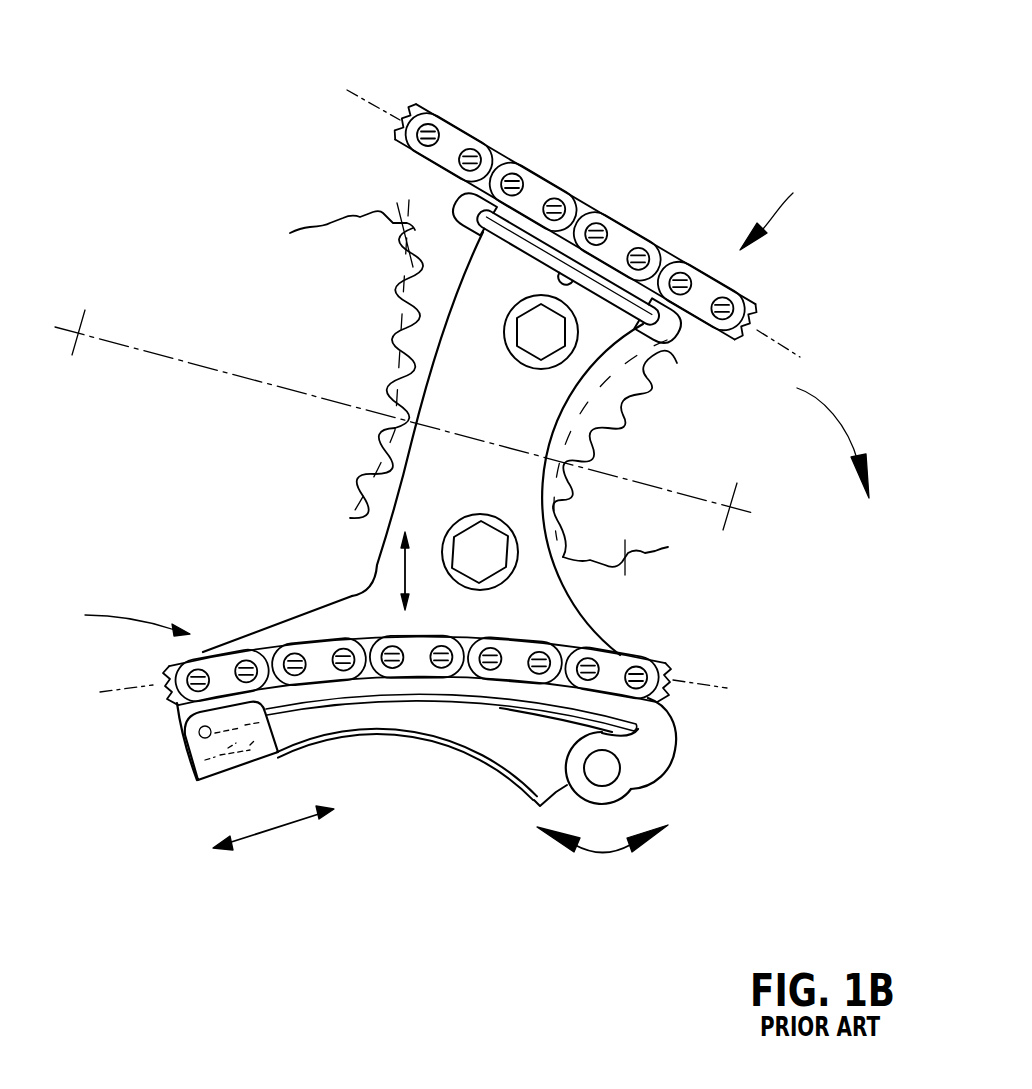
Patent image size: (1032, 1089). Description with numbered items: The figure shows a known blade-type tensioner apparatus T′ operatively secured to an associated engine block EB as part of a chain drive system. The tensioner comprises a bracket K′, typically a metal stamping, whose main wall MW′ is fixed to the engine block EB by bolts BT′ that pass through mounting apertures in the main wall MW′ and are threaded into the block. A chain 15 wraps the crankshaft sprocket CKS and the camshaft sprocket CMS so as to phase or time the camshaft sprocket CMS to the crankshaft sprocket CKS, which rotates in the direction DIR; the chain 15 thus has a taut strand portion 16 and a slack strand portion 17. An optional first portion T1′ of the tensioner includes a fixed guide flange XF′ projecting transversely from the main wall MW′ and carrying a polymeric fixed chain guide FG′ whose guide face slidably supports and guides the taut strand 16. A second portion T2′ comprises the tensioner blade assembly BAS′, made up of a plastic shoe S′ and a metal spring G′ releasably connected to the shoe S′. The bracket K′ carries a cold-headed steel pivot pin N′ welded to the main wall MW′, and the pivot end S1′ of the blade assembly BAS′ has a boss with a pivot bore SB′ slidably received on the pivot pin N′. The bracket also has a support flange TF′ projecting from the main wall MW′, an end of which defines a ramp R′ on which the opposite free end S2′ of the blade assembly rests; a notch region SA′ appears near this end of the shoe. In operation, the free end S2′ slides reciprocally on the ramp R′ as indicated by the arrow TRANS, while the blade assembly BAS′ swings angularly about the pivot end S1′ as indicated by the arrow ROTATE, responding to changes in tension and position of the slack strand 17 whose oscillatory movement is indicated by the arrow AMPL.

The chain 15 is at (441, 92).
The taut strand portion 16 is at (548, 178).
The slack strand portion 17 is at (262, 652).
The engine block EB is at (433, 213).
The camshaft sprocket CMS is at (353, 247).
The fixed chain guide FG′ is at (603, 277).
The blade-type tensioner apparatus T′ is at (780, 210).
The fixed guide flange XF′ is at (523, 242).
The first portion T1′ is at (522, 280).
The main wall MW′ is at (477, 368).
The bolts BT′ is at (543, 337).
The bracket K′ is at (587, 444).
The direction of rotation DIR is at (840, 410).
The slack strand oscillation arrow AMPL is at (376, 572).
The tensioner blade assembly BAS′ is at (398, 668).
The second portion T2′ is at (116, 618).
The crankshaft sprocket CKS is at (623, 547).
The pivot end S1′ is at (633, 750).
The pivot bore SB′ is at (605, 768).
The pivot pin N′ is at (607, 768).
The spring G′ is at (560, 712).
The free end S2′ is at (245, 777).
The ramp R′ is at (180, 745).
The shoe arm notch SA′ is at (523, 777).
The support flange TF′ is at (477, 760).
The translational motion arrow TRANS is at (275, 830).
The shoe S′ is at (360, 690).
The rotational movement arrow ROTATE is at (602, 852).